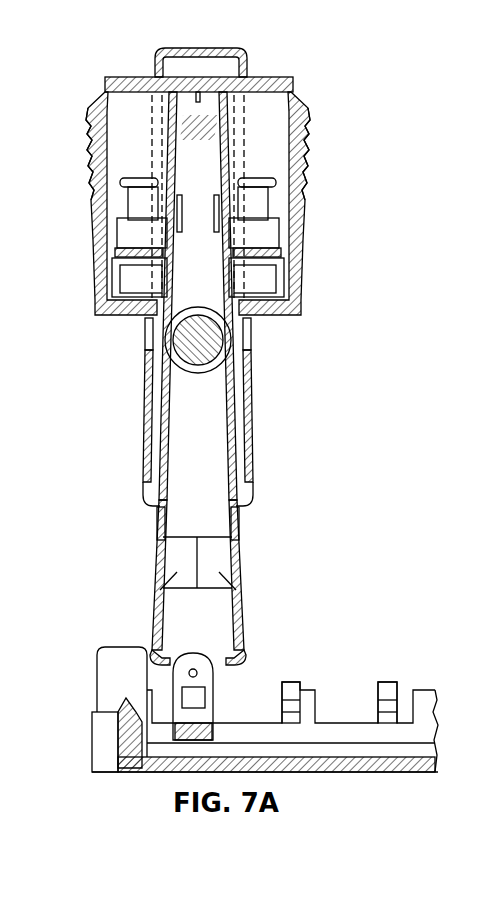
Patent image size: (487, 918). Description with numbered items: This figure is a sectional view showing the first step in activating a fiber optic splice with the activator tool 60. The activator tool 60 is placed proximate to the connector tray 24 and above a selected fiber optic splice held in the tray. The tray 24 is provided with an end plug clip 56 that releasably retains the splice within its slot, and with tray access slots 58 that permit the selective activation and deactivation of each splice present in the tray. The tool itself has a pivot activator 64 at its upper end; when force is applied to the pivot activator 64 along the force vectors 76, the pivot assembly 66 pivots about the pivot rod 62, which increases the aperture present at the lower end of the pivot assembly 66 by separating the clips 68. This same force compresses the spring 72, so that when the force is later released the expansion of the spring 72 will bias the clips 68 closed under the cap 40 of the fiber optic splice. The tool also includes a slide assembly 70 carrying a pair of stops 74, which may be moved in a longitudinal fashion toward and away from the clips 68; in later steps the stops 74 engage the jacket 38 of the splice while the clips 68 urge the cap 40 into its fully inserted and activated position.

The connector tray 24 is at (422, 715).
The jacket 38 is at (165, 676).
The cap 40 is at (207, 731).
The end plug clip 56 is at (290, 688).
The tray access slots 58 is at (350, 755).
The activator tool 60 is at (299, 73).
The pivot rod 62 is at (197, 360).
The pivot activator 64 is at (305, 250).
The pivot assembly 66 is at (254, 535).
The clips 68 is at (215, 656).
The slide assembly 70 is at (142, 437).
The spring 72 is at (168, 110).
The stops 74 is at (152, 580).
The force vectors 76 is at (88, 157).